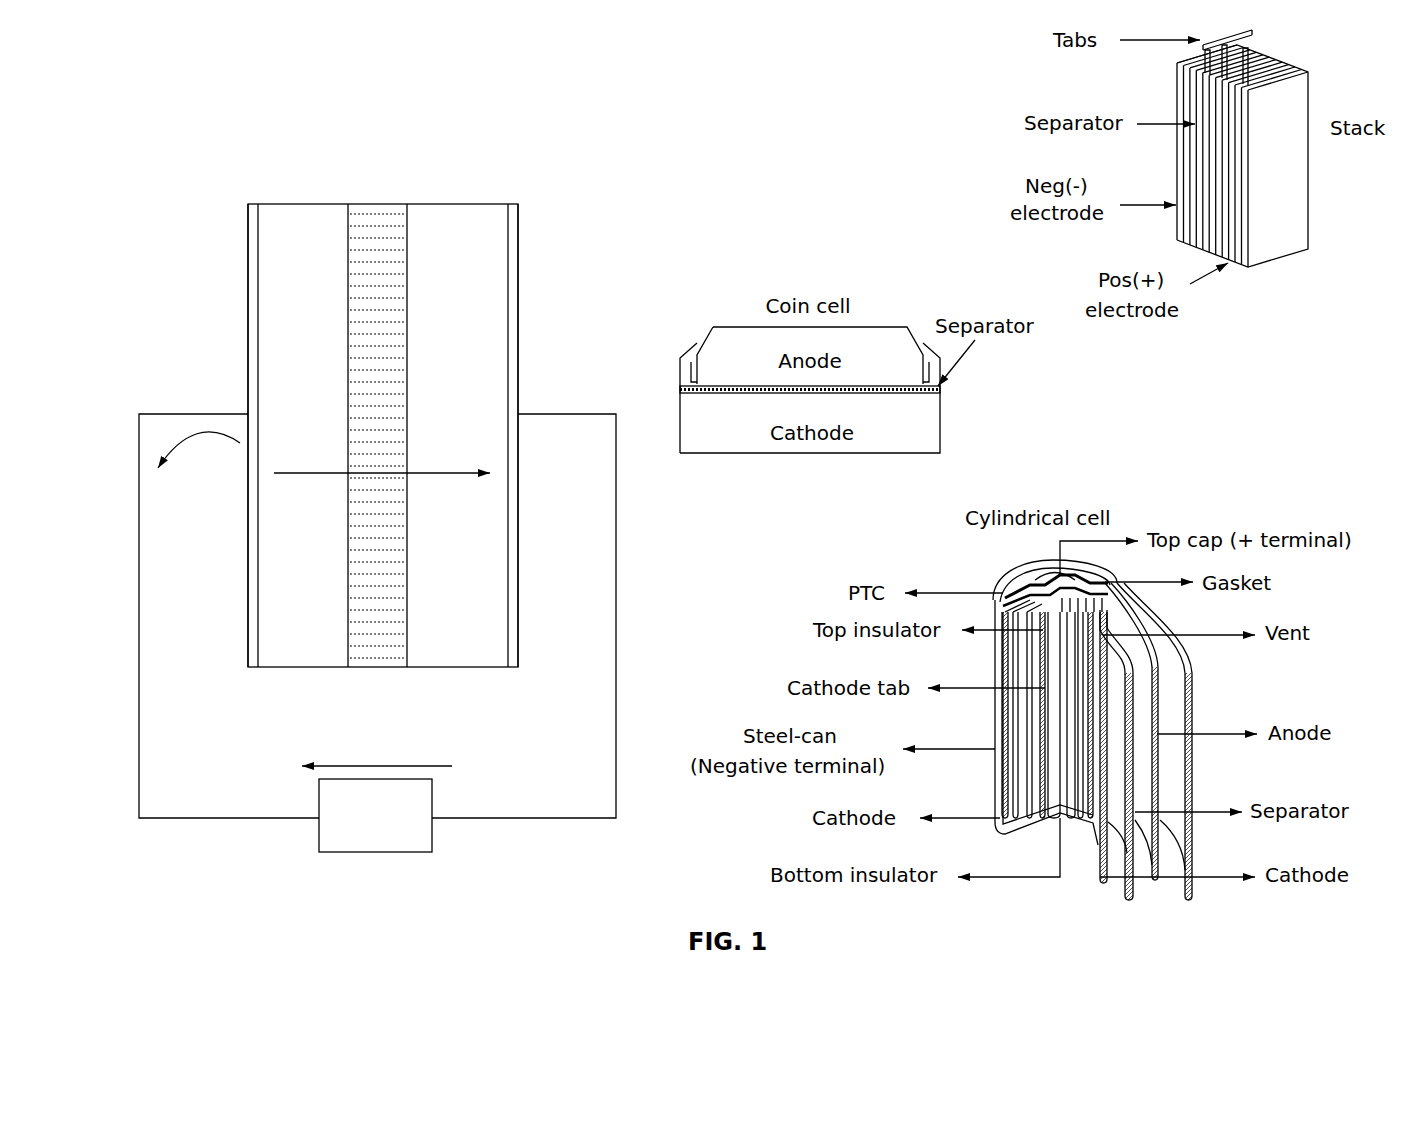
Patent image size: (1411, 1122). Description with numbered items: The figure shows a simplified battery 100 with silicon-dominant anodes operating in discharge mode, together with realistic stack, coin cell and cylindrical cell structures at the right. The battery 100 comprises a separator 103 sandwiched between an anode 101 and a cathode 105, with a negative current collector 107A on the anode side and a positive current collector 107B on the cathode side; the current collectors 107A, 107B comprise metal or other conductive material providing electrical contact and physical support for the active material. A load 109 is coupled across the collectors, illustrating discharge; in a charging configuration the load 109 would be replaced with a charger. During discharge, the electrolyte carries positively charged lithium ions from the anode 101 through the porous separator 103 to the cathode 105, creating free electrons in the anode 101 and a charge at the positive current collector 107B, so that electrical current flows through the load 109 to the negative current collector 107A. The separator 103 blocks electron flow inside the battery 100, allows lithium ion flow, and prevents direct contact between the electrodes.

The battery 100 is at (210, 153).
The anode 101 is at (289, 376).
The separator 103 is at (378, 204).
The cathode 105 is at (443, 376).
The negative current collector 107A is at (248, 233).
The positive current collector 107B is at (518, 258).
The load 109 is at (358, 837).